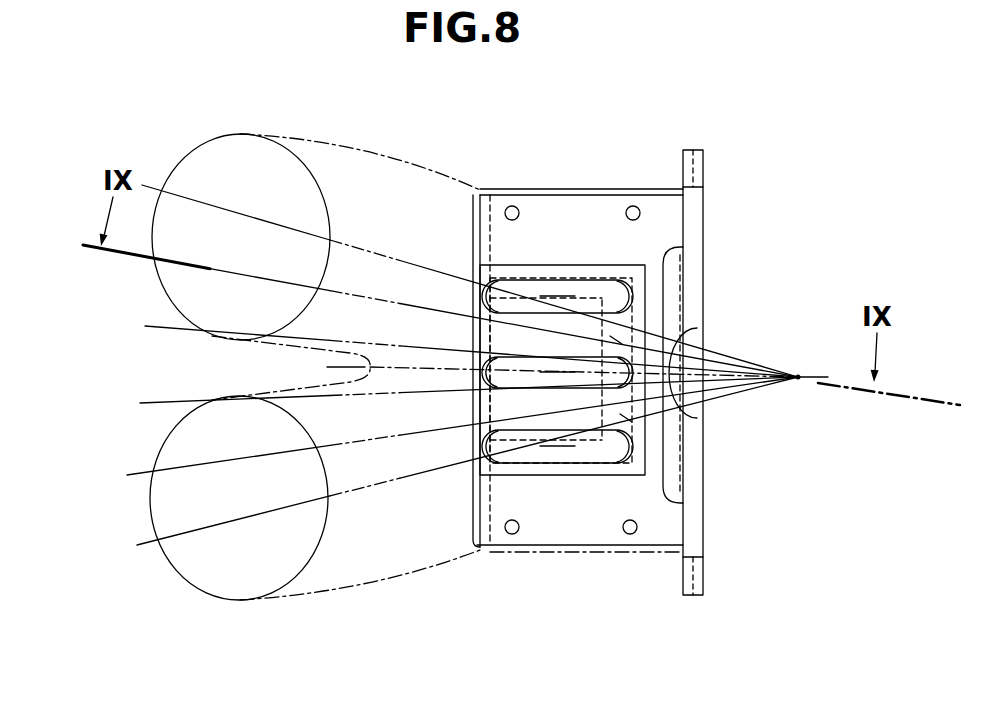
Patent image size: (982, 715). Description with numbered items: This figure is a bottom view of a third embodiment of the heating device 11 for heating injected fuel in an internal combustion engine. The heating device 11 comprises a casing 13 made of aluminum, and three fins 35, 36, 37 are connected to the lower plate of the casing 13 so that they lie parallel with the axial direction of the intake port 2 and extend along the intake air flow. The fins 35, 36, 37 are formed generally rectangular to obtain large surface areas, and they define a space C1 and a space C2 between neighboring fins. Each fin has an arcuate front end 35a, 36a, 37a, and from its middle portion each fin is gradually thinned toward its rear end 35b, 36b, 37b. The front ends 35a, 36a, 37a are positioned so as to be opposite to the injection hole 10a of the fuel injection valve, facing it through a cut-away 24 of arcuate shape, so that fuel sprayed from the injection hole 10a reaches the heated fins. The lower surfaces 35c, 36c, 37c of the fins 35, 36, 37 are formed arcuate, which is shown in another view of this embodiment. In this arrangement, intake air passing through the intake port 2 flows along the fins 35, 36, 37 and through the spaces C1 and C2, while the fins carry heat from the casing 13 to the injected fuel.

The intake port 2 is at (386, 576).
The injection hole 10a is at (800, 375).
The heating device 11 is at (722, 182).
The casing 13 is at (654, 182).
The cut-away 24 is at (690, 358).
The fin 35 is at (594, 276).
The front end of fin 35a is at (633, 308).
The rear end of fin 35b is at (490, 296).
The lower surface of fin 35c is at (550, 292).
The fin 36 is at (610, 355).
The front end of fin 36a is at (633, 375).
The rear end of fin 36b is at (483, 368).
The lower surface of fin 36c is at (540, 392).
The fin 37 is at (594, 475).
The front end of fin 37a is at (633, 463).
The rear end of fin 37b is at (487, 452).
The lower surface of fin 37c is at (548, 454).
The space C1 is at (615, 340).
The space C2 is at (625, 418).